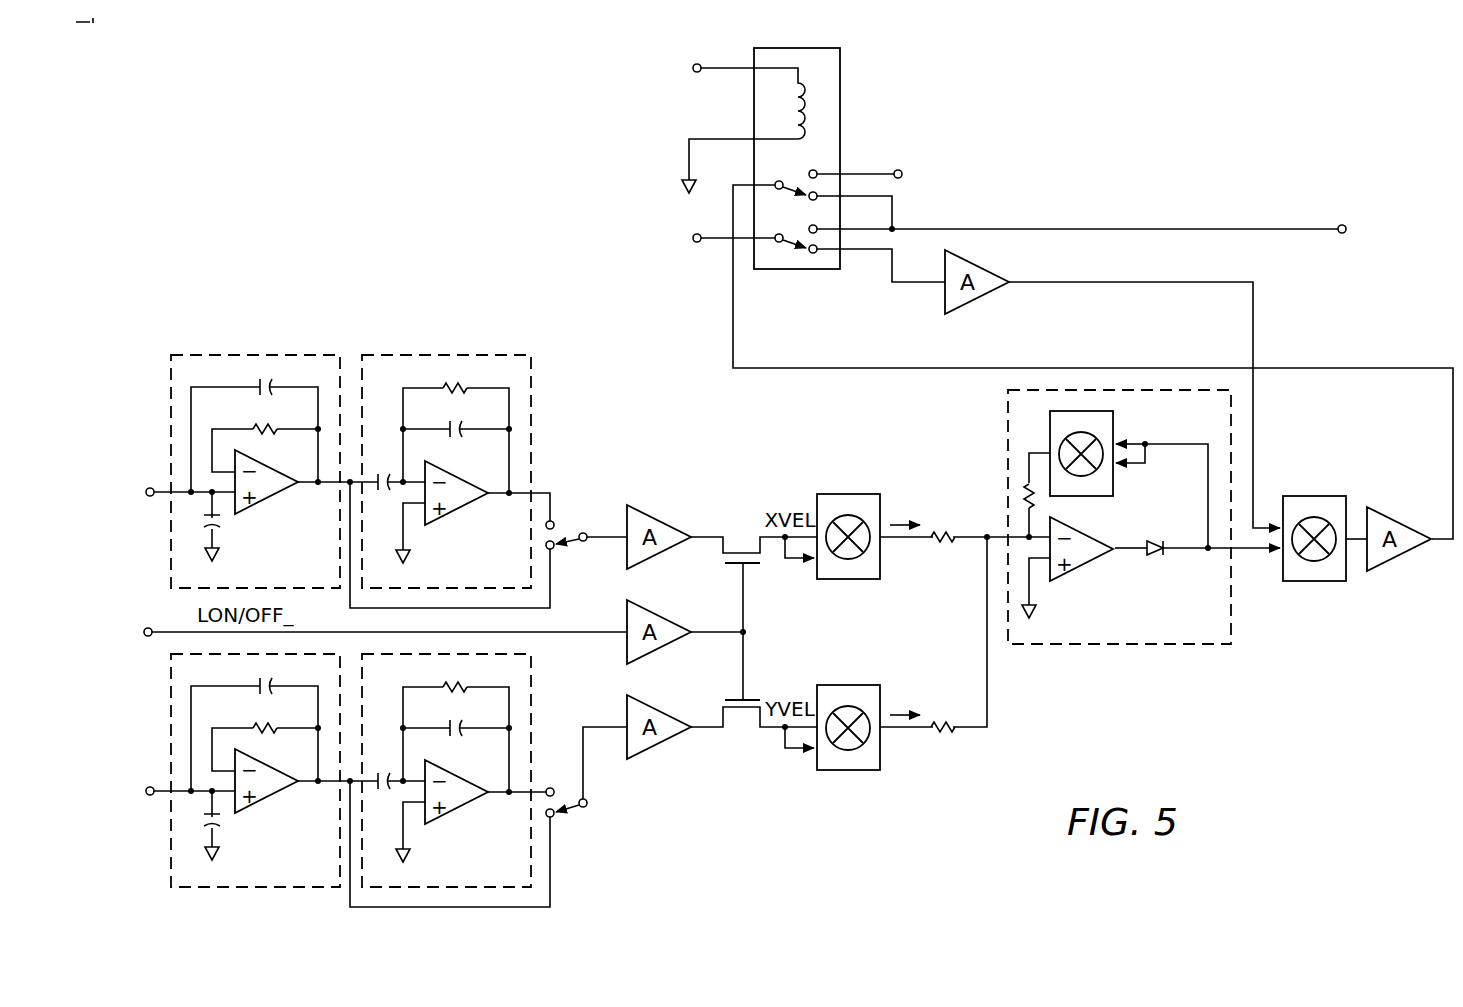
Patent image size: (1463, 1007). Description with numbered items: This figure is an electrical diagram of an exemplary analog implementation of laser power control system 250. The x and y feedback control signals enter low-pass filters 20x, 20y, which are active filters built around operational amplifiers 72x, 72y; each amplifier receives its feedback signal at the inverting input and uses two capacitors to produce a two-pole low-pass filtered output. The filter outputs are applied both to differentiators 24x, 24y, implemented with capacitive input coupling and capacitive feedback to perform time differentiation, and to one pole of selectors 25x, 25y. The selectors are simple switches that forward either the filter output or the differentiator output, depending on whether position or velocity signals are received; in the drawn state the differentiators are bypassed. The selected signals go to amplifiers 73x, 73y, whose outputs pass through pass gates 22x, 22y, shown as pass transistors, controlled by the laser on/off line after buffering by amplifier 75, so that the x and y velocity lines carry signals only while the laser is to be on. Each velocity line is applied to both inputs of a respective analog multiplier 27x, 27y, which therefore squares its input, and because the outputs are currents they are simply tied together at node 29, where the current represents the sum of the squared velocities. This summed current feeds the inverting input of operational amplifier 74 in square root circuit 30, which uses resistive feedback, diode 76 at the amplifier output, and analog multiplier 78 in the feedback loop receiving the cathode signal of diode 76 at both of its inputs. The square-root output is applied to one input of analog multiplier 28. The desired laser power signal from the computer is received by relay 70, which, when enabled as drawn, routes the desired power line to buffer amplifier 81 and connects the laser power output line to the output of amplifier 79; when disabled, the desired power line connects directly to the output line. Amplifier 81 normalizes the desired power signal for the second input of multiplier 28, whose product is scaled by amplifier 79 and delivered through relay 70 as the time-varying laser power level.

The laser power control system 250 is at (528, 260).
The relay 70 is at (840, 129).
The buffer amplifier 81 is at (965, 303).
The low-pass filter 20x is at (226, 445).
The operational amplifier 72x is at (270, 504).
The differentiator 24x is at (531, 425).
The selector 25x is at (568, 549).
The low-pass filter 20y is at (224, 770).
The operational amplifier 72y is at (270, 803).
The differentiator 24y is at (531, 702).
The selector 25y is at (568, 810).
The amplifier 73x is at (660, 554).
The amplifier 75 is at (660, 649).
The amplifier 73y is at (660, 744).
The pass gate 22x is at (755, 568).
The pass gate 22y is at (752, 700).
The analog multiplier 27x is at (852, 582).
The analog multiplier 27y is at (852, 772).
The node 29 is at (985, 545).
The square root circuit 30 is at (1144, 546).
The analog multiplier 78 is at (1113, 428).
The operational amplifier 74 is at (1084, 566).
The diode 76 is at (1154, 559).
The analog multiplier 28 is at (1315, 582).
The amplifier 79 is at (1403, 559).